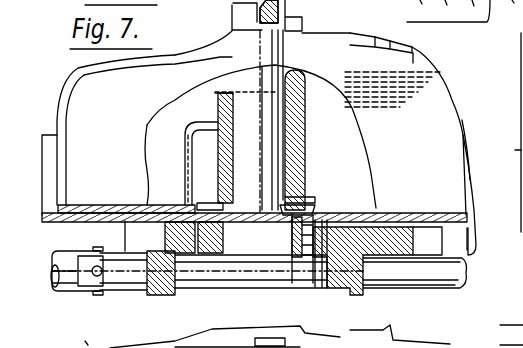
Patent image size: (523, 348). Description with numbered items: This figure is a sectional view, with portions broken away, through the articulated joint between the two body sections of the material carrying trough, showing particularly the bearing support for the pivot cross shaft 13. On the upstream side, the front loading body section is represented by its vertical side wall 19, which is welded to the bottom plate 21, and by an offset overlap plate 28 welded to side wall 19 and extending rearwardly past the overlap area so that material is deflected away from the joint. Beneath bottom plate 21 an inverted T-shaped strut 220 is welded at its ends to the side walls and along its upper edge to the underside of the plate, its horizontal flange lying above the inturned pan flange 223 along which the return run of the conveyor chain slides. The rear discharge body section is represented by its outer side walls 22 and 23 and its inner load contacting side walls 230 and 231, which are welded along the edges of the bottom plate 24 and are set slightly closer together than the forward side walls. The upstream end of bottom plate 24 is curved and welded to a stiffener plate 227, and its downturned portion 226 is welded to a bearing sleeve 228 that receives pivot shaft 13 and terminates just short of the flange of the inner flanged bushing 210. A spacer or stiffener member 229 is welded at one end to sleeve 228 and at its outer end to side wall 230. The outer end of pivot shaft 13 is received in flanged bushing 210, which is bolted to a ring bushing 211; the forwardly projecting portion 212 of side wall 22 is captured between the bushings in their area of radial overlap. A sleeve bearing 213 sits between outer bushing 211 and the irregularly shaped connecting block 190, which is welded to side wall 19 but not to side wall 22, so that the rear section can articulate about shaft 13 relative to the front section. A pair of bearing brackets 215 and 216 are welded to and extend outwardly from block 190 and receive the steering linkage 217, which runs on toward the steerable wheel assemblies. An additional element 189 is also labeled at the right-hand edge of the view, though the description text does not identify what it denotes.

The pivot cross shaft 13 is at (285, 32).
The side wall 19 is at (430, 197).
The bottom plate 21 is at (442, 108).
The outer side wall 22 is at (47, 218).
The outer side wall 23 is at (71, 337).
The bottom plate 24 is at (175, 48).
The offset overlap plate 28 is at (522, 63).
The side wall 189 is at (520, 128).
The connecting block 190 is at (142, 241).
The flanged bushing 210 is at (237, 281).
The ring bushing 211 is at (225, 285).
The forwardly projecting portion 212 is at (332, 212).
The sleeve bearing 213 is at (328, 285).
The bearing bracket 215 is at (158, 296).
The bearing bracket 216 is at (348, 303).
The steering linkage 217 is at (64, 279).
The inverted T-shaped strut 220 is at (412, 44).
The pan flange 223 is at (472, 150).
The downturned portion 226 is at (322, 90).
The stiffener plate 227 is at (63, 97).
The bearing sleeve 228 is at (196, 124).
The spacer or stiffener member 229 is at (147, 165).
The inner load contacting side wall 230 is at (117, 185).
The inner load contacting side wall 231 is at (175, 346).